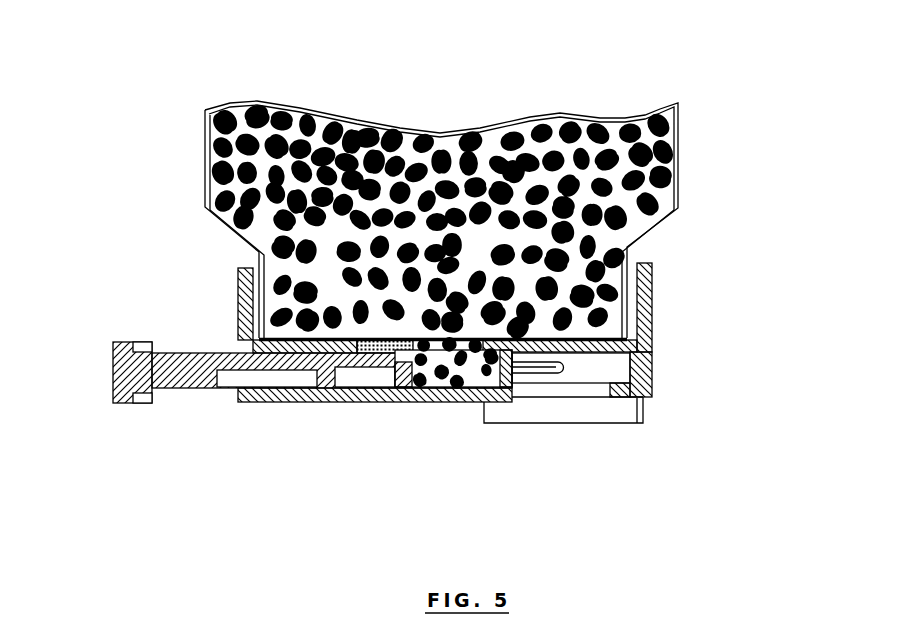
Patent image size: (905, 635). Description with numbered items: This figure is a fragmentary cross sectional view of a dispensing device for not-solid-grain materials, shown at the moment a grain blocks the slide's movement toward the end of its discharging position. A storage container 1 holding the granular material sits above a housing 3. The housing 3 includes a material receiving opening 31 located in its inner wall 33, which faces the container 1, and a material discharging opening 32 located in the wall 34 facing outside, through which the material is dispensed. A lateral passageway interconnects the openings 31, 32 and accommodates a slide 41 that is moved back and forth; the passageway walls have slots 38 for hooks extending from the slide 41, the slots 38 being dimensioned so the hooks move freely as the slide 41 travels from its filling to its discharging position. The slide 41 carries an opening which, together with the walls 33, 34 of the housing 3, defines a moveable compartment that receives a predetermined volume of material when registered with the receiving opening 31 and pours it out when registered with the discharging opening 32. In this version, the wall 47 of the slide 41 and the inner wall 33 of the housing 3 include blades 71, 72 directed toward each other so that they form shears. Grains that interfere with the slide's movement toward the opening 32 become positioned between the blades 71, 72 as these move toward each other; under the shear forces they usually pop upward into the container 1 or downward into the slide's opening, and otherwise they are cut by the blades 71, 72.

The container 1 is at (680, 168).
The housing 3 is at (643, 350).
The material receiving opening 31 is at (412, 340).
The material discharging opening 32 is at (565, 392).
The inner wall 33 is at (325, 340).
The wall 34 is at (303, 388).
The slots 38 is at (563, 367).
The slide 41 is at (121, 369).
The wall of slide 47 is at (405, 386).
The blade 71 is at (383, 366).
The blade 72 is at (472, 345).